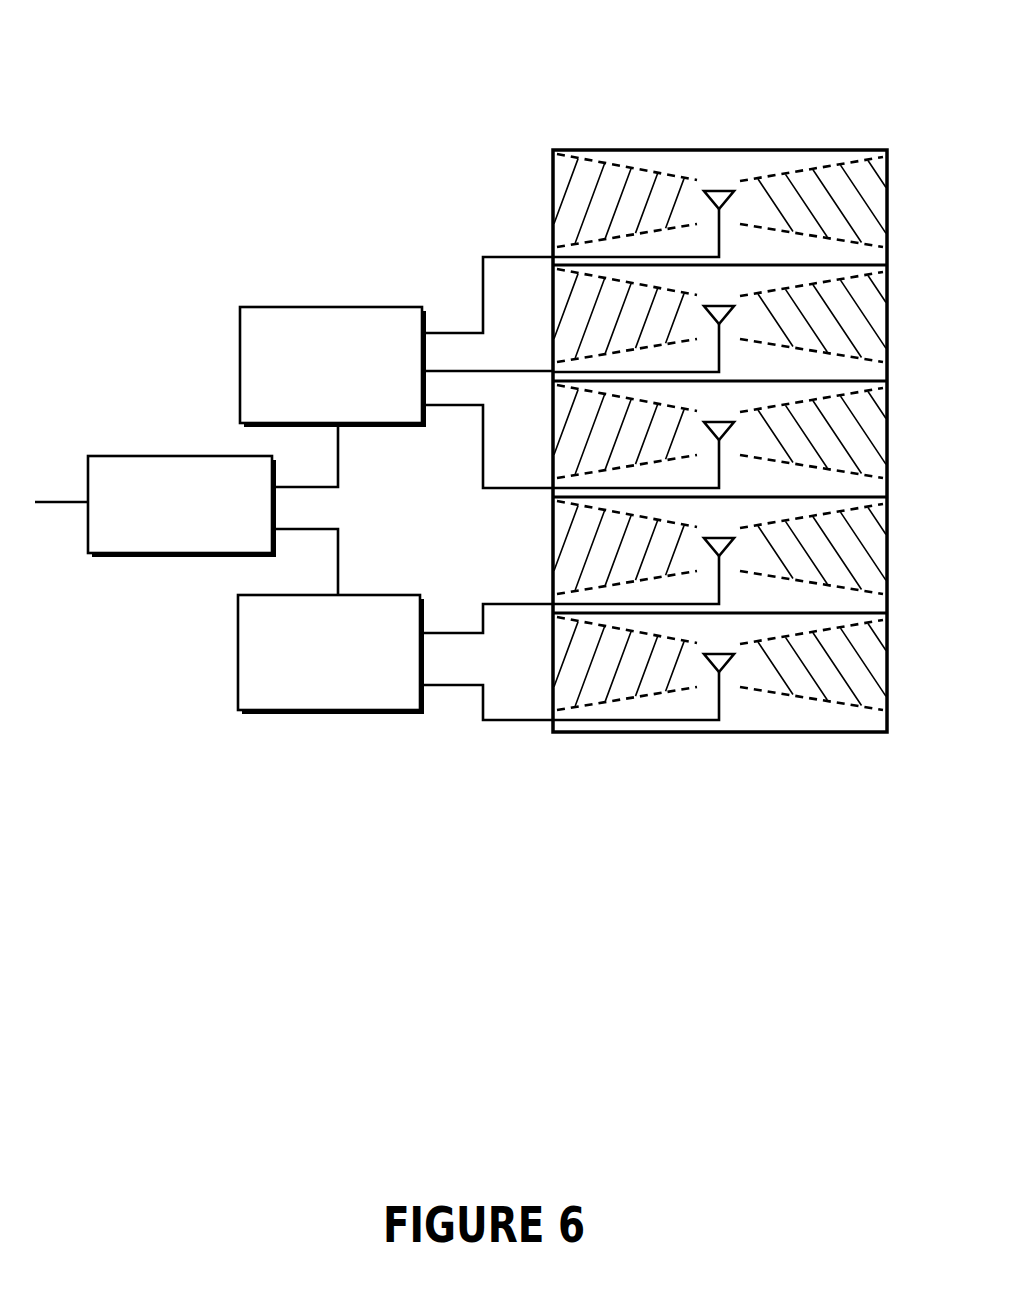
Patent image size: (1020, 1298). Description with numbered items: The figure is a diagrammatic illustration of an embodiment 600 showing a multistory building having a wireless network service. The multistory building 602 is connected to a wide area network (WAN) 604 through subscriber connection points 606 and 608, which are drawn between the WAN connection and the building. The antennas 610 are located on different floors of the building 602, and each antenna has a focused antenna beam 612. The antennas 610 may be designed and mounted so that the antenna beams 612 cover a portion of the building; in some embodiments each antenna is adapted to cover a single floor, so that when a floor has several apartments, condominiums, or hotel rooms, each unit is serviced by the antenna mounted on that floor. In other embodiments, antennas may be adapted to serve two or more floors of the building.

The embodiment 600 is at (300, 866).
The multistory building 602 is at (735, 733).
The wide area network (WAN) 604 is at (135, 456).
The subscriber connection point 606 is at (240, 363).
The subscriber connection point 608 is at (238, 652).
The antennas 610 is at (712, 299).
The antenna beam 612 is at (780, 188).